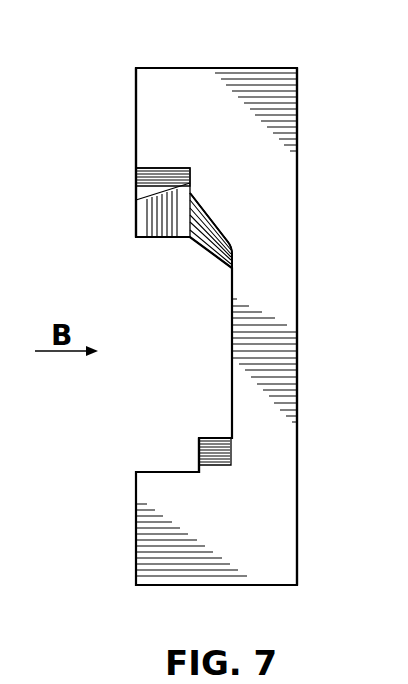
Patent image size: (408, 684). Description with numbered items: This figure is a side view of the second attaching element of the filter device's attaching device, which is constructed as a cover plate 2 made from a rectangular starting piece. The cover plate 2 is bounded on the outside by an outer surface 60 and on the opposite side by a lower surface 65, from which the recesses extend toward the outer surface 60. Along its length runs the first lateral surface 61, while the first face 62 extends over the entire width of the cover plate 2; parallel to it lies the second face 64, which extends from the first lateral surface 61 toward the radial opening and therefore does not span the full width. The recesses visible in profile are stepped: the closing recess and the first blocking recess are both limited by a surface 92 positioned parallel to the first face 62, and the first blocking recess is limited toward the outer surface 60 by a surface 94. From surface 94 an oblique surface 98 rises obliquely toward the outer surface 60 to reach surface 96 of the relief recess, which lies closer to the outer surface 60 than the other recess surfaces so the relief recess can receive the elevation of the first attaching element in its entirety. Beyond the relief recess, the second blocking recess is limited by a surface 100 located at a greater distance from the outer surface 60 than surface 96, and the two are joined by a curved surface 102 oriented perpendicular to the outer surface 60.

The cover plate 2 is at (108, 55).
The outer surface 60 is at (297, 305).
The first lateral surface 61 is at (235, 146).
The first face 62 is at (222, 68).
The second face 64 is at (233, 585).
The lower surface 65 is at (136, 127).
The surface 92 is at (165, 168).
The surface 94 is at (136, 200).
The surface 96 is at (233, 318).
The oblique surface 98 is at (217, 241).
The surface 100 is at (198, 455).
The curved surface 102 is at (216, 453).